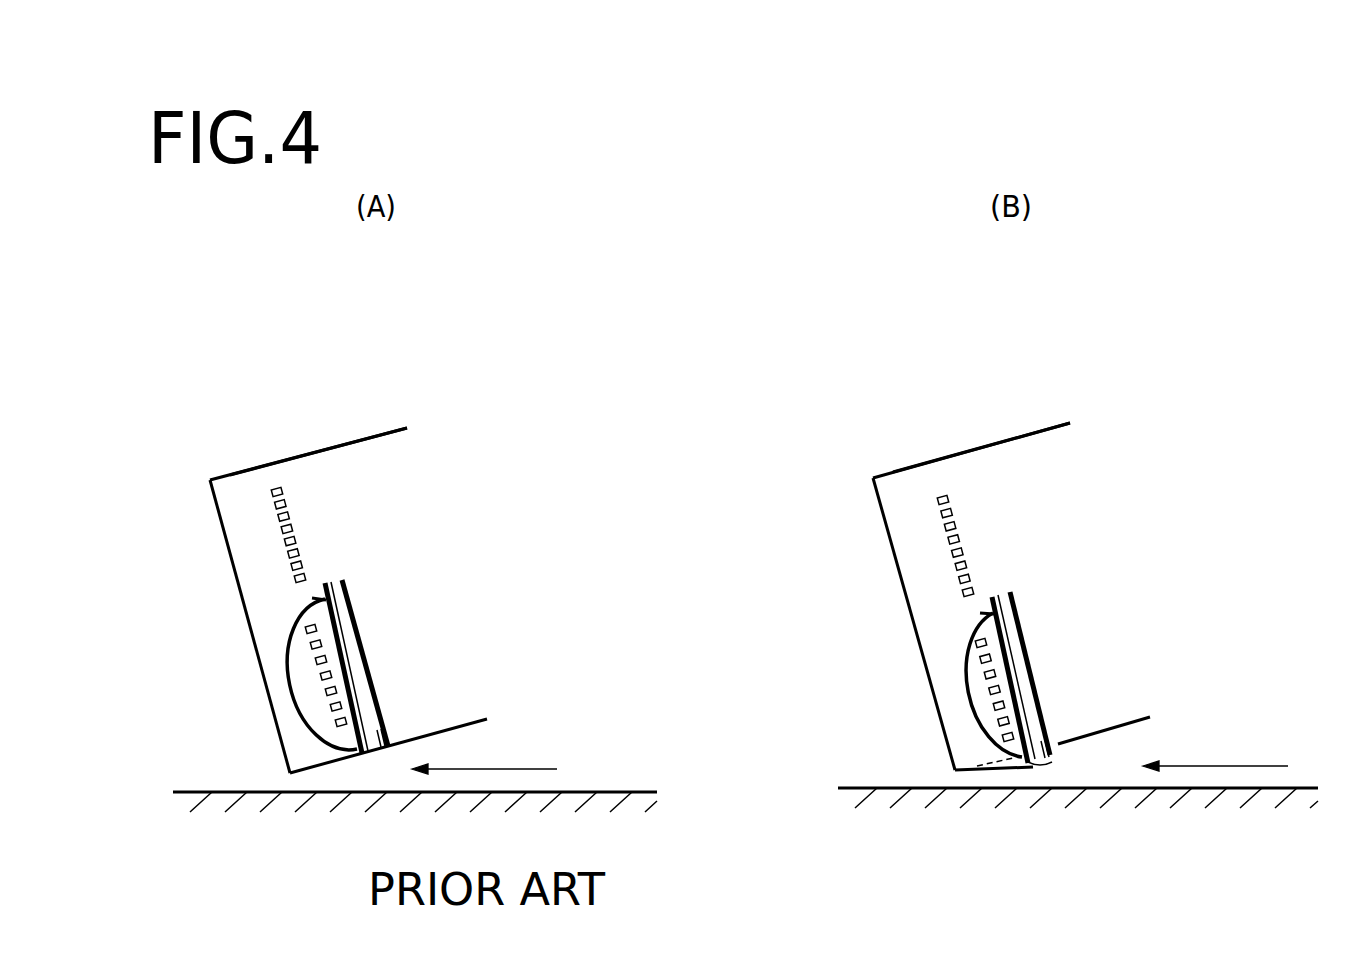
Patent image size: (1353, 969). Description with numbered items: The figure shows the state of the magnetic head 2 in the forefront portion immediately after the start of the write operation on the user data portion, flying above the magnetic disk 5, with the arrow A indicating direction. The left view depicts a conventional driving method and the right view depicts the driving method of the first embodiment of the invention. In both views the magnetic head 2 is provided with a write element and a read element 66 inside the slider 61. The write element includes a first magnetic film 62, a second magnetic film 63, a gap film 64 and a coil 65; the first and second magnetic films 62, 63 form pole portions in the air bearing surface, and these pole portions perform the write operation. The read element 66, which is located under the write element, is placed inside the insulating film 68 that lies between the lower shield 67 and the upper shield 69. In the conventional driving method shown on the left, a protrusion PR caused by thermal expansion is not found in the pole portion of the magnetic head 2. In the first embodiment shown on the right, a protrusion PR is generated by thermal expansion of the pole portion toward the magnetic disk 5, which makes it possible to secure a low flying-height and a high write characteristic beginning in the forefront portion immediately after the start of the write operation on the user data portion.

The magnetic head 2 is at (219, 477).
The magnetic disk 5 is at (195, 792).
The slider 61 is at (367, 447).
The first magnetic film 62 is at (327, 612).
The second magnetic film 63 is at (287, 667).
The gap film 64 is at (283, 553).
The coil 65 is at (355, 749).
The read element 66 is at (386, 733).
The lower shield 67 is at (373, 678).
The insulating film 68 is at (350, 631).
The upper shield 69 is at (329, 589).
The direction arrow A is at (496, 770).
The protrusion PR is at (1052, 762).